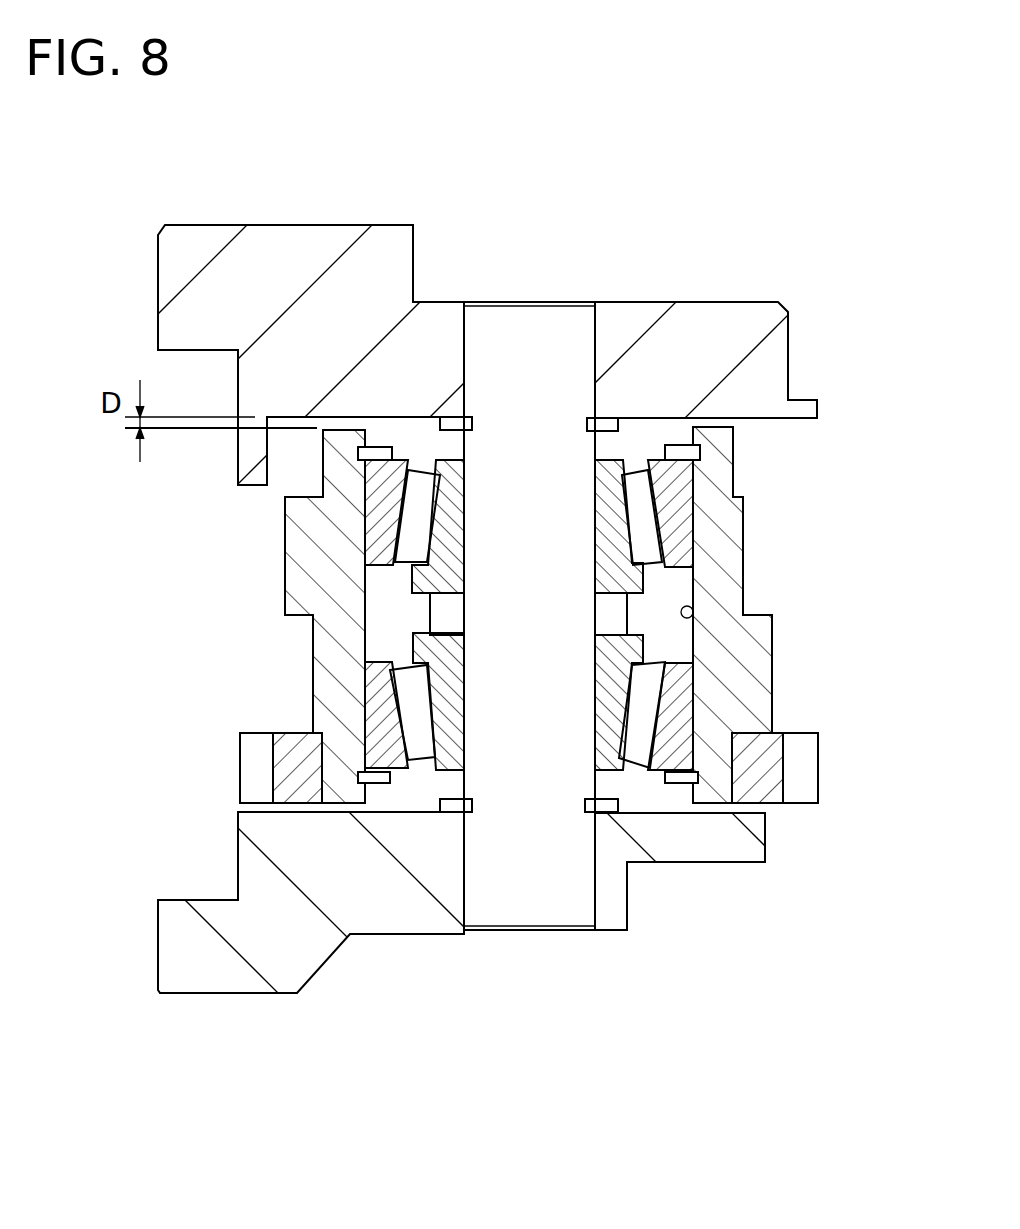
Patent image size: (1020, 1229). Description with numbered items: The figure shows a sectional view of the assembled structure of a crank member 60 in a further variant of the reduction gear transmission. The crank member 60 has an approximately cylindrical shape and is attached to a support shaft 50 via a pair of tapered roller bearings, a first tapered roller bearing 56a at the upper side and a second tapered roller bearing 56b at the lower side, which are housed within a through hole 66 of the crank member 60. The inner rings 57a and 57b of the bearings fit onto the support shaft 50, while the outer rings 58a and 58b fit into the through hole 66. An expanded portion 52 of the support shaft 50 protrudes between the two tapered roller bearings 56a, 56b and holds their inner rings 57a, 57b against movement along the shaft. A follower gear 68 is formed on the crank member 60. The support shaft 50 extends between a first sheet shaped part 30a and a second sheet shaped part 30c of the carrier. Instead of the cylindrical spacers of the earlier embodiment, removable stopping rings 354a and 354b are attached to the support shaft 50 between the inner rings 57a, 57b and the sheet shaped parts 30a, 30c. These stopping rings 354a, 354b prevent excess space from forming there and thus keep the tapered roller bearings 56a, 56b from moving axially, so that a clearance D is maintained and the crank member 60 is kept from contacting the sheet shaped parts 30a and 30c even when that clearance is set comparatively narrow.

The first sheet shaped part 30a is at (732, 325).
The second sheet shaped part 30c is at (712, 843).
The support shaft 50 is at (515, 325).
The expanded portion 52 is at (540, 608).
The stopping ring 354a is at (452, 420).
The stopping ring 354b is at (454, 812).
The first tapered roller bearing 56a is at (412, 532).
The inner ring 57a is at (437, 580).
The outer ring 58a is at (382, 493).
The second tapered roller bearing 56b is at (410, 685).
The inner ring 57b is at (443, 710).
The outer ring 58b is at (383, 736).
The crank member 60 is at (745, 650).
The through hole 66 is at (693, 612).
The follower gear 68 is at (768, 768).